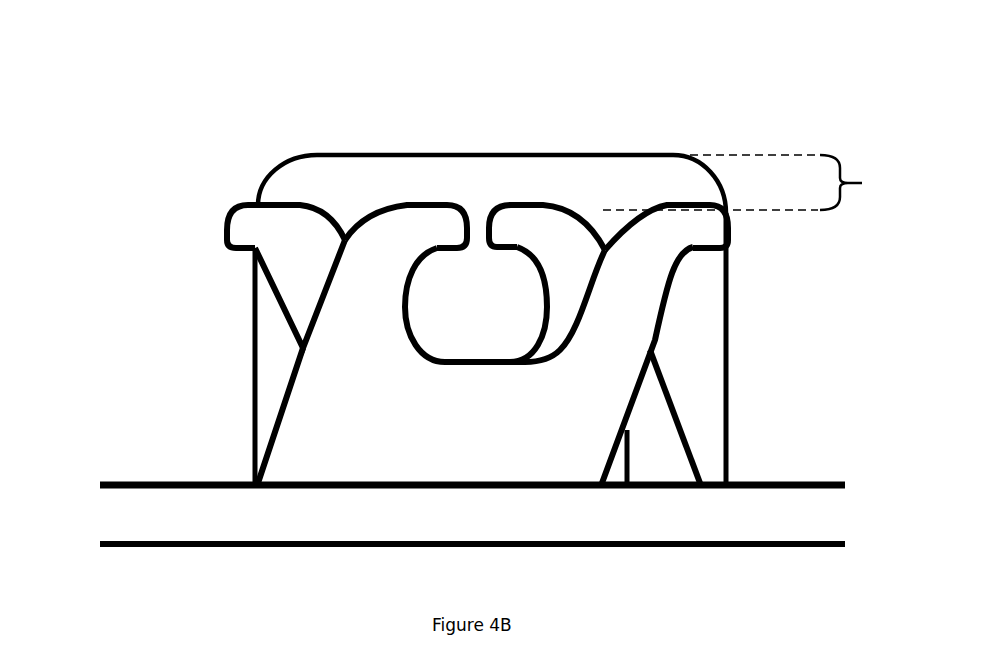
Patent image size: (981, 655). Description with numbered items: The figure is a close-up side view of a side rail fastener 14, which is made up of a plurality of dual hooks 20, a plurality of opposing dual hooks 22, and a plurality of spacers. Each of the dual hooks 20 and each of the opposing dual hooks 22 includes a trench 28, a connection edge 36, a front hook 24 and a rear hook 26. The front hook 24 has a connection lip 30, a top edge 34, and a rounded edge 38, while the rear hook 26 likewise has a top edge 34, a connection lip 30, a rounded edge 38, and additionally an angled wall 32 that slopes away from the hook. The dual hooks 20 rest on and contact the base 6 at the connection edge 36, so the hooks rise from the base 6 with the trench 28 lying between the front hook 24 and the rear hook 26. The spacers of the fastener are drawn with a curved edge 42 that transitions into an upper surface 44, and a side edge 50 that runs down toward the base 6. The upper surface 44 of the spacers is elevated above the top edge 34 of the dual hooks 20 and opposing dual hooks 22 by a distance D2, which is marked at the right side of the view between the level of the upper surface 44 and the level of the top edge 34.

The side rail fastener 14 is at (150, 97).
The upper surface 44 is at (380, 153).
The curved edge 42 is at (690, 163).
The side edge 50 is at (253, 308).
The front hook 24 is at (244, 196).
The rear hook 26 is at (427, 190).
The connection lip 30 is at (433, 245).
The rounded edge 38 is at (353, 234).
The top edge 34 is at (672, 207).
The trench 28 is at (477, 362).
The angled wall 32 is at (287, 384).
The opposing dual hook 22 is at (666, 432).
The dual hook 20 is at (315, 400).
The connection edge 36 is at (487, 490).
The base 6 is at (642, 523).
The distance D2 is at (862, 183).